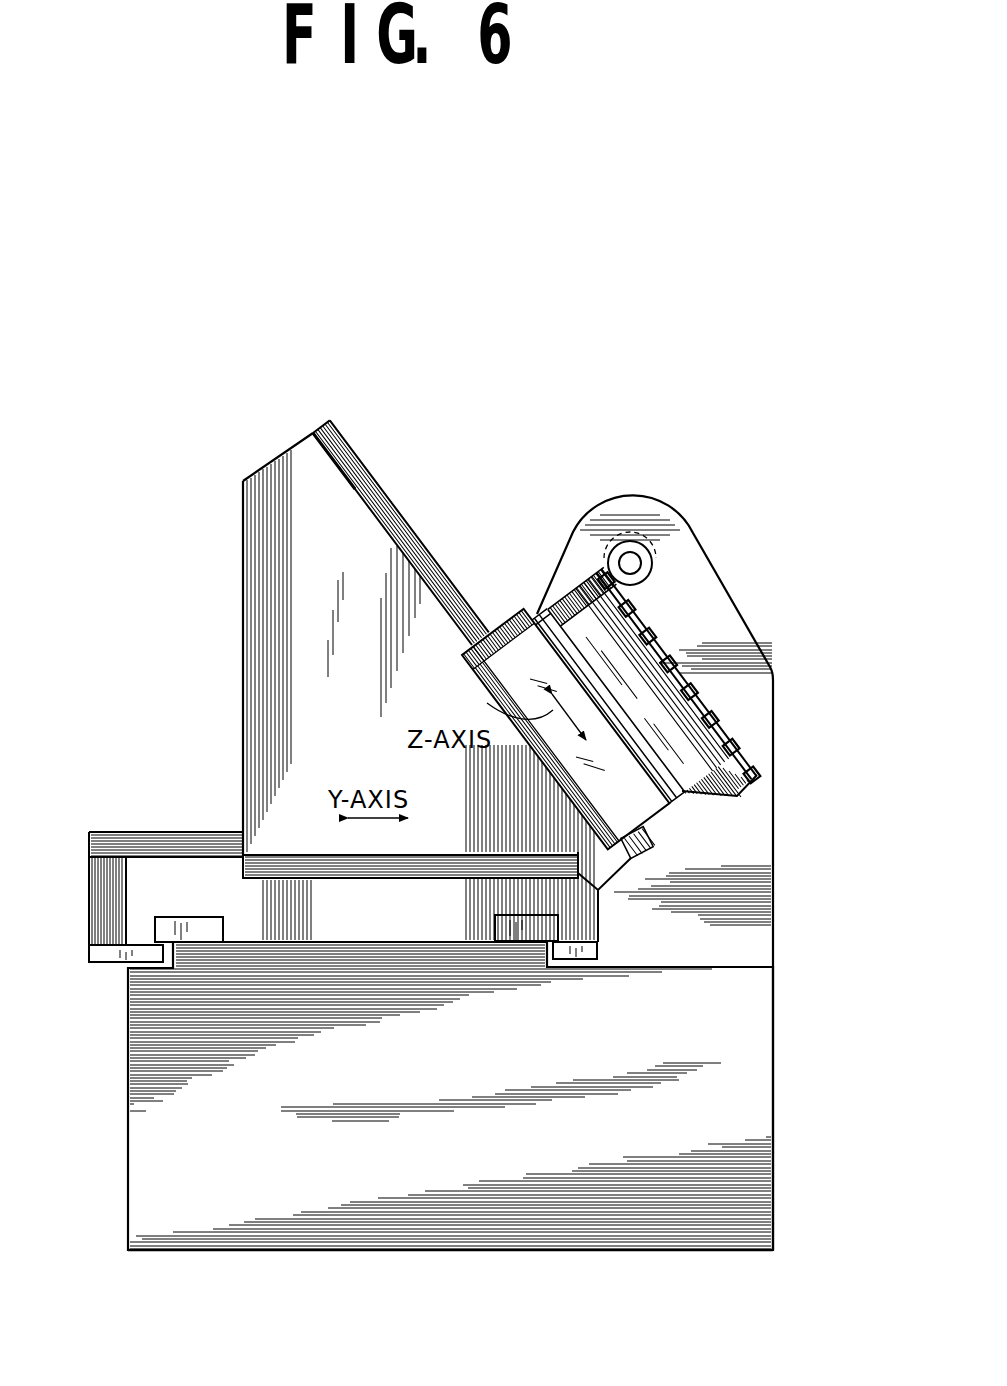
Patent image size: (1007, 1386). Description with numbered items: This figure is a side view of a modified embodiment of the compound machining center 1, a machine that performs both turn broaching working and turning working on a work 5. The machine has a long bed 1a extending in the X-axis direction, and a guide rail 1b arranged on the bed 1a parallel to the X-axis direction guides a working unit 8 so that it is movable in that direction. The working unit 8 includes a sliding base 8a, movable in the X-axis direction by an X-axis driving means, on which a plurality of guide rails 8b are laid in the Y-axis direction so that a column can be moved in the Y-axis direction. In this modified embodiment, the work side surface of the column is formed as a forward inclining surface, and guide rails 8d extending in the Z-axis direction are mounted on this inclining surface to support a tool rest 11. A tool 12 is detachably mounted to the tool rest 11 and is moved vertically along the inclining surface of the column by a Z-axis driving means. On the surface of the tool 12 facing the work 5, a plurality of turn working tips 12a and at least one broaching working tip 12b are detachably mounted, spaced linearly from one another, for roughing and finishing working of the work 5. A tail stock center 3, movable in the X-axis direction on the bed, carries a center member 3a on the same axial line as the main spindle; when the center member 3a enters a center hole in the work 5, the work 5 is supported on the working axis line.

The compound machining center 1 is at (122, 1112).
The bed 1a is at (459, 1215).
The guide rail 1b is at (157, 928).
The tail stock center 3 is at (737, 672).
The center member 3a is at (615, 548).
The work 5 is at (668, 528).
The working unit 8 is at (236, 559).
The sliding base 8a is at (126, 865).
The guide rails 8b is at (205, 842).
The guide rails 8d is at (375, 482).
The tool rest 11 is at (515, 652).
The tool 12 is at (740, 792).
The turn working tips 12a is at (733, 745).
The broaching working tip 12b is at (652, 632).